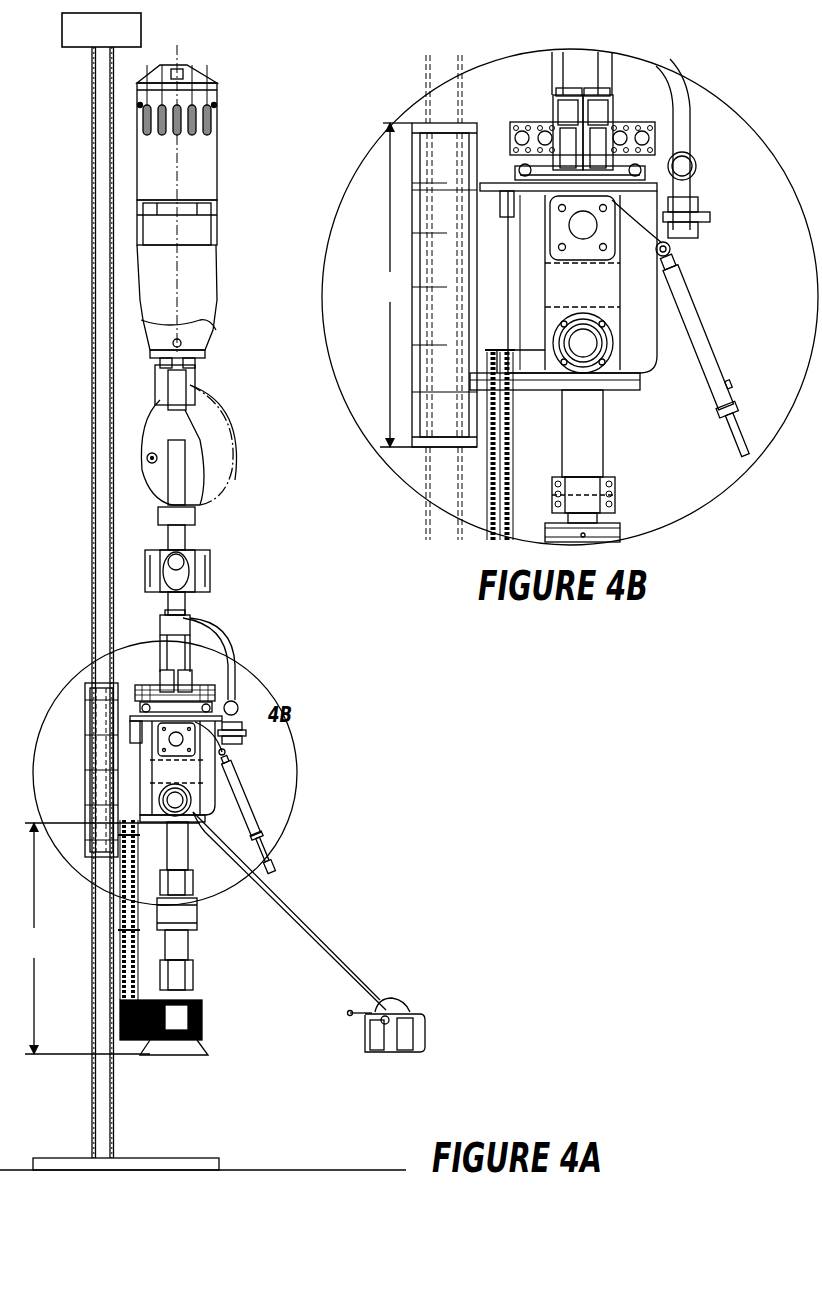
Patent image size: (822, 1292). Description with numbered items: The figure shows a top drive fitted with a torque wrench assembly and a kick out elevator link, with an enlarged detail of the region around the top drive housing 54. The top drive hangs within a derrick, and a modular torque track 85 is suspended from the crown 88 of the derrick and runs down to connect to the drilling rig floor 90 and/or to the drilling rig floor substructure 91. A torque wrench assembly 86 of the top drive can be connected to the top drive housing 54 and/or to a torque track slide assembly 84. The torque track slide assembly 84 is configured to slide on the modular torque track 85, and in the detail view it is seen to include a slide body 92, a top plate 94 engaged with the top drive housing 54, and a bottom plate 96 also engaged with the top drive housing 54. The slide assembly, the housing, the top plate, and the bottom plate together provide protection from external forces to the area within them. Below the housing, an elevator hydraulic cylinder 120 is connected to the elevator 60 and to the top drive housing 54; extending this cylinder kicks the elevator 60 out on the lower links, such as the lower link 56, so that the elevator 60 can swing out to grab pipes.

In FIG. 4A, the crown 88 is at (62, 25).
In FIG. 4A, the modular torque track 85 is at (92, 364).
In FIG. 4A, the torque wrench assembly 86 is at (112, 938).
In FIG. 4A, the drilling rig floor 90 is at (48, 1158).
In FIG. 4A, the drilling rig floor substructure 91 is at (298, 1170).
In FIG. 4A, the lower link 56 is at (313, 936).
In FIG. 4A, the elevator 60 is at (420, 1015).
In FIG. 4B, the slide body 92 is at (478, 126).
In FIG. 4B, the top plate 94 is at (487, 190).
In FIG. 4B, the torque track slide assembly 84 is at (428, 285).
In FIG. 4B, the top drive housing 54 is at (636, 283).
In FIG. 4B, the elevator hydraulic cylinder 120 is at (712, 353).
In FIG. 4B, the bottom plate 96 is at (530, 385).